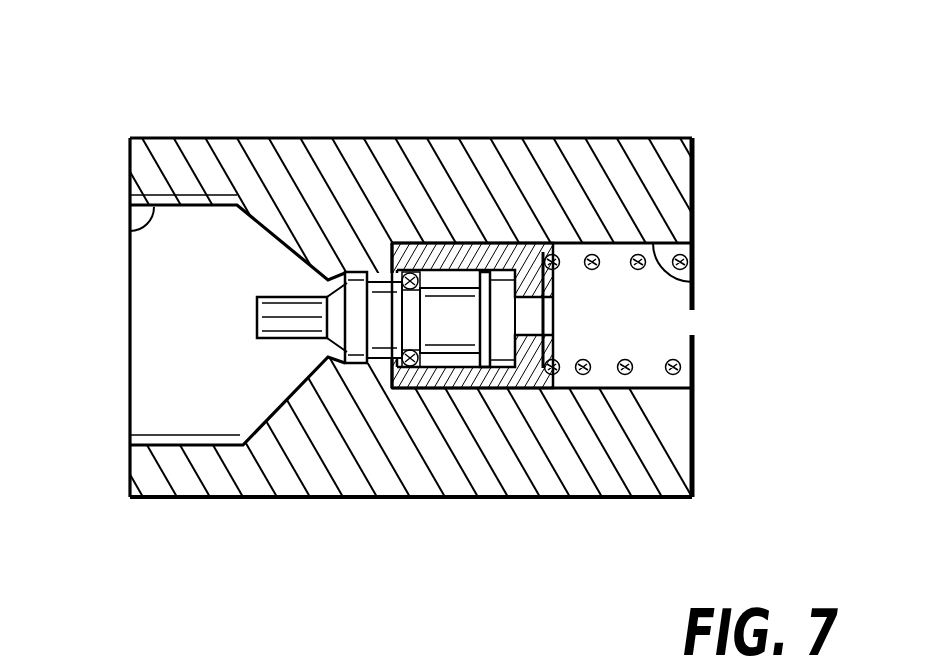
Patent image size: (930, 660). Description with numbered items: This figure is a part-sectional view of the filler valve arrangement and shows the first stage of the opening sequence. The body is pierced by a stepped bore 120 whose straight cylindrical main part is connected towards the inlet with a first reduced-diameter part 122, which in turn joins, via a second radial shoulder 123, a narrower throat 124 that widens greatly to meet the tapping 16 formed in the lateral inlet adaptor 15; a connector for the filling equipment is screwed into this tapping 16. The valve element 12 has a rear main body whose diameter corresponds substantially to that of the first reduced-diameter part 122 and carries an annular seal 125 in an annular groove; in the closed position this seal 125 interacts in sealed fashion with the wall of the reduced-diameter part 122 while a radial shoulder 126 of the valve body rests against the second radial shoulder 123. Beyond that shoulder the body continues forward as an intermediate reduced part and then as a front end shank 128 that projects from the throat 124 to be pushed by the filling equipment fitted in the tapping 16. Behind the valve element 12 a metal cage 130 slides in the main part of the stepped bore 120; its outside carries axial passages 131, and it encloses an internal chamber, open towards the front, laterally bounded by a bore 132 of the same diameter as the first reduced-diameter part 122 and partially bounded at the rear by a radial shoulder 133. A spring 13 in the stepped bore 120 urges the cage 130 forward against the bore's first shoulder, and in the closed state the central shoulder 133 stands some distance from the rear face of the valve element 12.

The lateral inlet adaptor 15 is at (226, 112).
The spring 13 is at (690, 366).
The tapping 16 is at (128, 232).
The metal cage 130 is at (578, 248).
The stepped bore 120 is at (697, 292).
The radial shoulder 133 is at (500, 345).
The axial passages 131 is at (486, 275).
The valve element 12 is at (443, 327).
The bore 132 is at (438, 292).
The radial shoulder 126 is at (368, 282).
The annular seal 125 is at (416, 372).
The throat 124 is at (453, 367).
The second radial shoulder 123 is at (350, 272).
The first reduced-diameter part 122 is at (345, 340).
The front end shank 128 is at (278, 308).